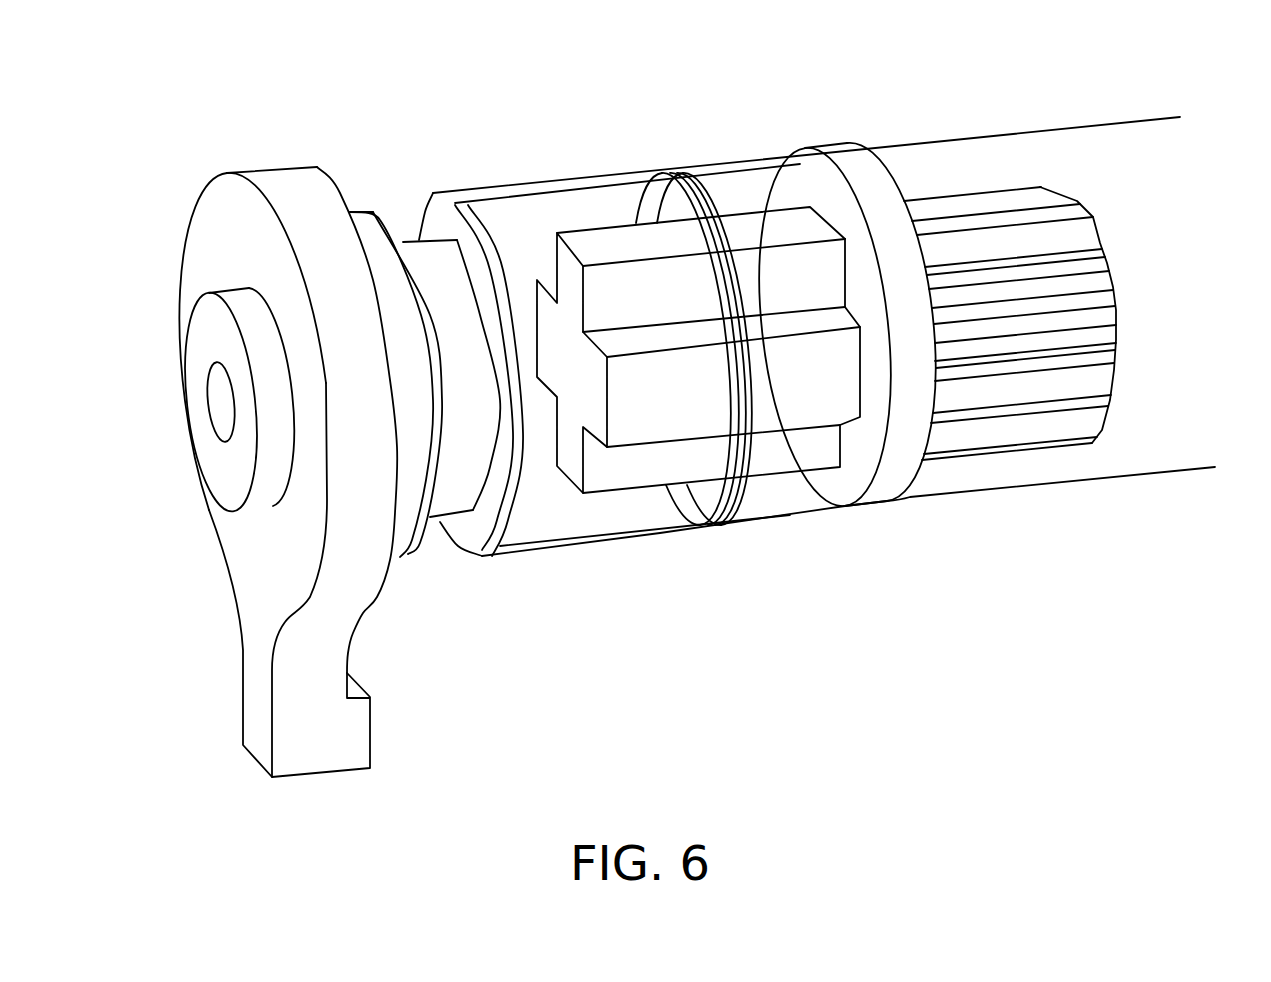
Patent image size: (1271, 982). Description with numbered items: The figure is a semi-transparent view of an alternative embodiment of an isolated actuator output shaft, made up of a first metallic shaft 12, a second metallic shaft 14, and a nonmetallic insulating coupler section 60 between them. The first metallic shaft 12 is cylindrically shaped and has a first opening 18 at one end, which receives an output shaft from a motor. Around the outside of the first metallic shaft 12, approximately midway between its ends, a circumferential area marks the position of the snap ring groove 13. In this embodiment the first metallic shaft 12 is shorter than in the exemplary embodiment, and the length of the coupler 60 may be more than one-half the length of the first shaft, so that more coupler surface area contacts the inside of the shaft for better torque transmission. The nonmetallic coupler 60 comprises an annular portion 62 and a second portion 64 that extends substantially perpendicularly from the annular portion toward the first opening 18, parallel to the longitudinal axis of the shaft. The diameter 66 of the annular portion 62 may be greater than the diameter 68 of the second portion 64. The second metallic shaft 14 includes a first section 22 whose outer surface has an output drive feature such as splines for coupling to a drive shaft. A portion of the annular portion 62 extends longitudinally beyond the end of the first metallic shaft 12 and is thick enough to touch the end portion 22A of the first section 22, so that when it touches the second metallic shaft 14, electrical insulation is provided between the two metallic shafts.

The first metallic shaft 12 is at (585, 168).
The snap ring groove 13 is at (680, 170).
The second metallic shaft 14 is at (1010, 466).
The first opening 18 is at (218, 397).
The first section 22 is at (1013, 198).
The end portion 22A is at (945, 197).
The nonmetallic insulating coupler section 60 is at (648, 498).
The annular portion 62 is at (845, 140).
The second portion 64 is at (778, 478).
The diameter of annular portion 66 is at (1177, 120).
The diameter of second portion 68 is at (567, 478).